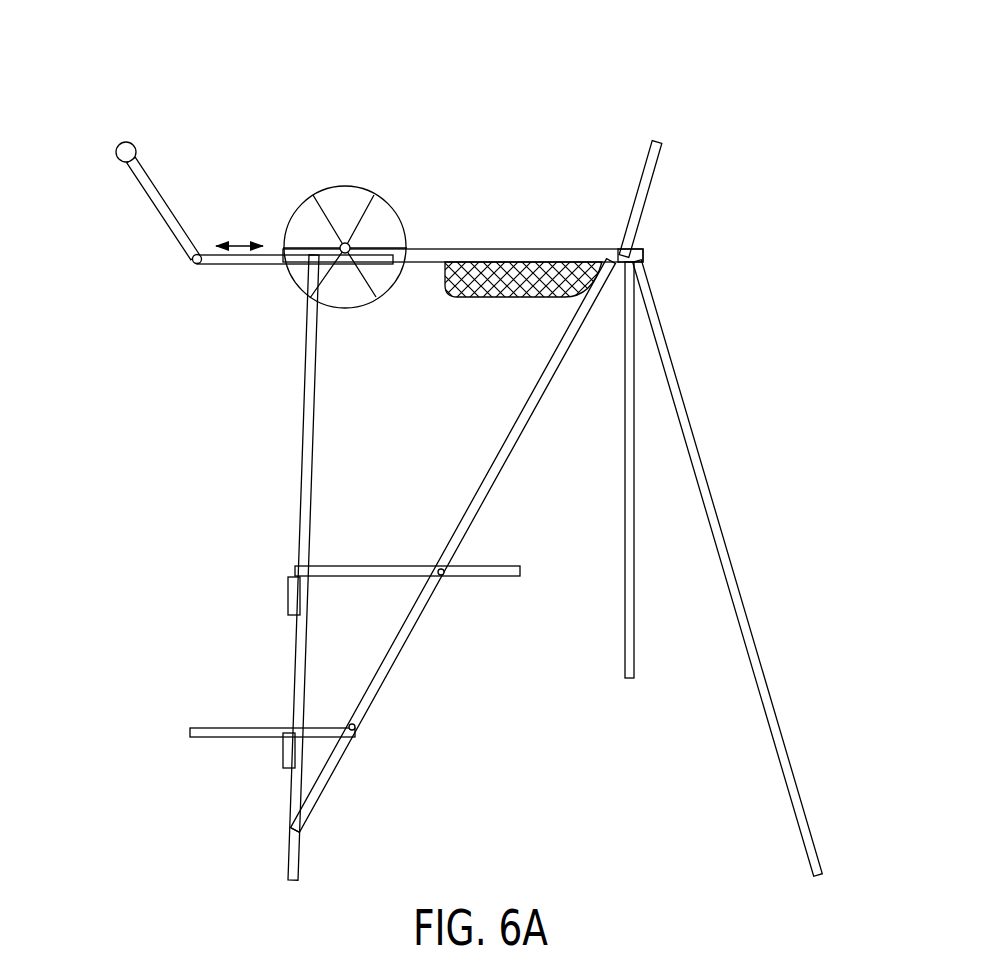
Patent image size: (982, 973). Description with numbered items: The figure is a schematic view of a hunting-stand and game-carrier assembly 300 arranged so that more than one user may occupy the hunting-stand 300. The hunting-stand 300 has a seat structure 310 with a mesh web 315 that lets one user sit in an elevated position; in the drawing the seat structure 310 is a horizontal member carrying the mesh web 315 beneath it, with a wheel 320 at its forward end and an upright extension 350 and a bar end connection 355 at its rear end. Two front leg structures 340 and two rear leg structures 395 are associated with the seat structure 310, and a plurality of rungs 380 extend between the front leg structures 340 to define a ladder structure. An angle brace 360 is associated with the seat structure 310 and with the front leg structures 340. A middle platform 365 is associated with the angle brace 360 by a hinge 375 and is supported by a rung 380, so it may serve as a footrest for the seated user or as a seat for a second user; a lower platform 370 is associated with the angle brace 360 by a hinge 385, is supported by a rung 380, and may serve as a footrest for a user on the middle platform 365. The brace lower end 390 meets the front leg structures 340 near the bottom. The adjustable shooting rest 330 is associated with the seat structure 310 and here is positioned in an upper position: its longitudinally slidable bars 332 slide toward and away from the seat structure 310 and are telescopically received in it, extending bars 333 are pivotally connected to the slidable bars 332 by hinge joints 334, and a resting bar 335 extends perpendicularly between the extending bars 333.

The hunting-stand and game-carrier assembly 300 is at (647, 77).
The seat structure 310 is at (440, 250).
The mesh web 315 is at (516, 268).
The wheel 320 is at (347, 244).
The adjustable shooting rest 330 is at (128, 205).
The slidable bars 332 is at (234, 266).
The extending bars 333 is at (178, 210).
The hinge joints 334 is at (193, 266).
The resting bar 335 is at (131, 137).
The front leg structures 340 is at (306, 380).
The upright extension 350 is at (647, 193).
The bar end connection 355 is at (645, 253).
The angle brace 360 is at (523, 412).
The middle platform 365 is at (295, 569).
The lower platform 370 is at (188, 732).
The hinge 375 is at (449, 563).
The rungs 380 is at (300, 592).
The hinge 385 is at (362, 727).
The brace lower end 390 is at (304, 827).
The rear leg structures 395 is at (635, 480).